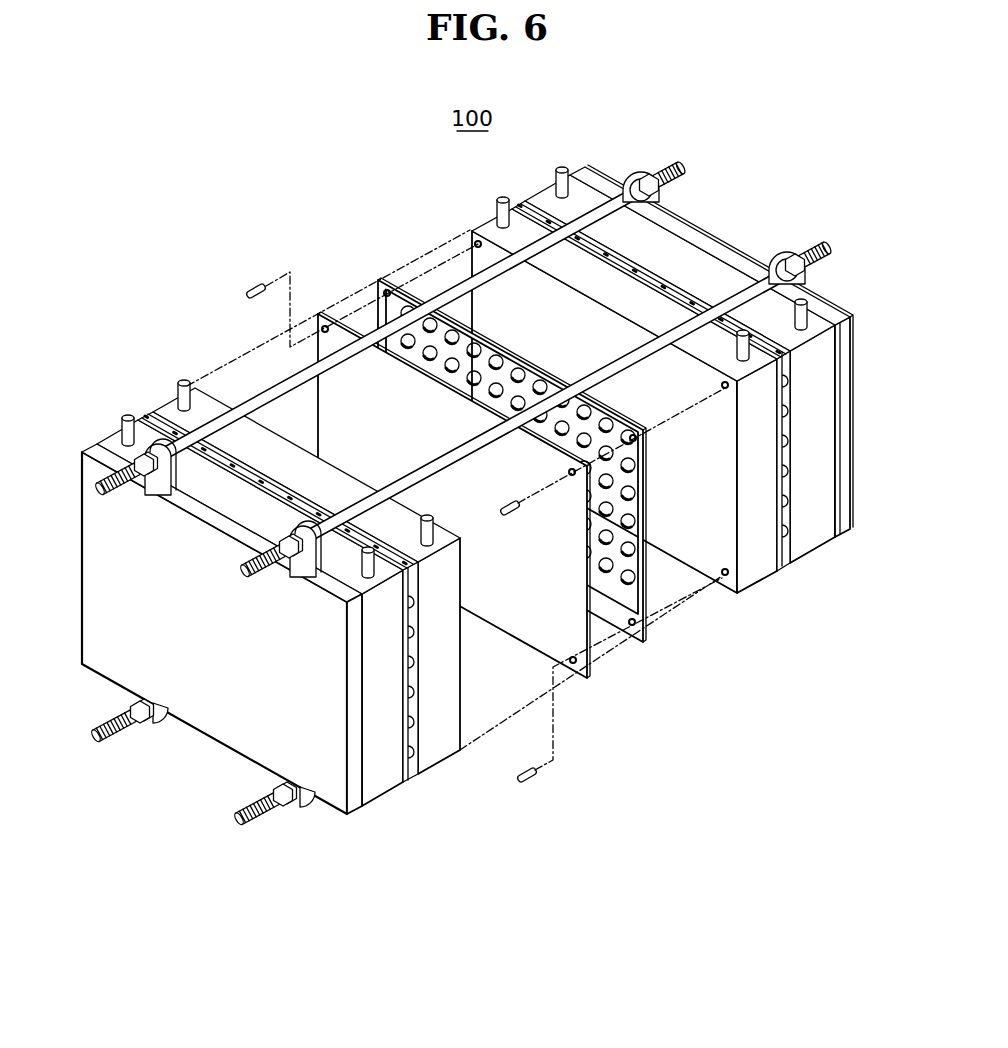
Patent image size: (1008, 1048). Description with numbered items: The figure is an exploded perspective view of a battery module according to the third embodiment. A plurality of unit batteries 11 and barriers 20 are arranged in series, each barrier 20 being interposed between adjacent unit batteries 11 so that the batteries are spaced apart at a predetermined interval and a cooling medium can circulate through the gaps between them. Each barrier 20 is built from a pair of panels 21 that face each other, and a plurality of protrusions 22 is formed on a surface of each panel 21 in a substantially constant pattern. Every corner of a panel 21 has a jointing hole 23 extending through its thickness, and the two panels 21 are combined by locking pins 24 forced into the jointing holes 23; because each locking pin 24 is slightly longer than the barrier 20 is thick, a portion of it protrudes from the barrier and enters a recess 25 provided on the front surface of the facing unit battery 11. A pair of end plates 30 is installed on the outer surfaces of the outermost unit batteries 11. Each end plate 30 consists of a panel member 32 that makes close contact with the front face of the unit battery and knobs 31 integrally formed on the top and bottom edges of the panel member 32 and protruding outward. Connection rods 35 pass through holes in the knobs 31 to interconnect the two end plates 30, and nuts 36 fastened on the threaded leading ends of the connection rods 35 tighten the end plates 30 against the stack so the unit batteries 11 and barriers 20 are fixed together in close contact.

The unit battery 11 is at (386, 804).
The barrier 20 is at (418, 786).
The panel 21 is at (547, 645).
The protrusion 22 is at (645, 565).
The jointing hole 23 is at (377, 288).
The locking pin 24 is at (252, 287).
The recess 25 is at (476, 243).
The end plate 30 is at (339, 828).
The knob 31 is at (155, 444).
The panel member 32 is at (353, 802).
The connection rod 35 is at (288, 380).
The nut 36 is at (135, 457).